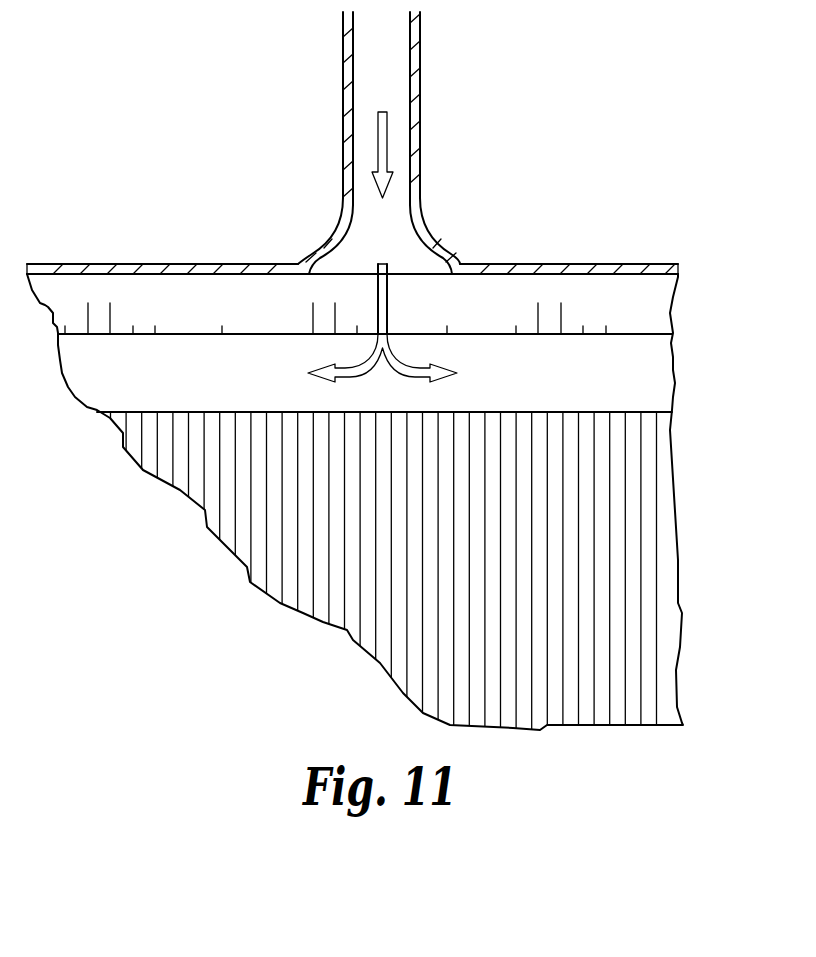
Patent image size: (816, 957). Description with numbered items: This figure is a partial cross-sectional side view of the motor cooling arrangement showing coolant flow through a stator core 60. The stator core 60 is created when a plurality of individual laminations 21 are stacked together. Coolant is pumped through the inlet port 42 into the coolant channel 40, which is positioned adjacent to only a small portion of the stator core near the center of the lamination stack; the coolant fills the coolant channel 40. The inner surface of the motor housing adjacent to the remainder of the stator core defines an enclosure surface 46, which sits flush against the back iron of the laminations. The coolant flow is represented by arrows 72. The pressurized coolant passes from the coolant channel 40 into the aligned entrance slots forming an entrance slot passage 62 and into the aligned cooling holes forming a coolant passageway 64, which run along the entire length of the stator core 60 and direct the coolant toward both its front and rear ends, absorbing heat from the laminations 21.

The laminations 21 is at (647, 682).
The coolant channel 40 is at (440, 218).
The inlet port 42 is at (423, 62).
The enclosure surface 46 is at (118, 264).
The stator core 60 is at (222, 587).
The entrance slot passage 62 is at (582, 298).
The coolant passageway 64 is at (235, 372).
The arrows 72 is at (377, 141).